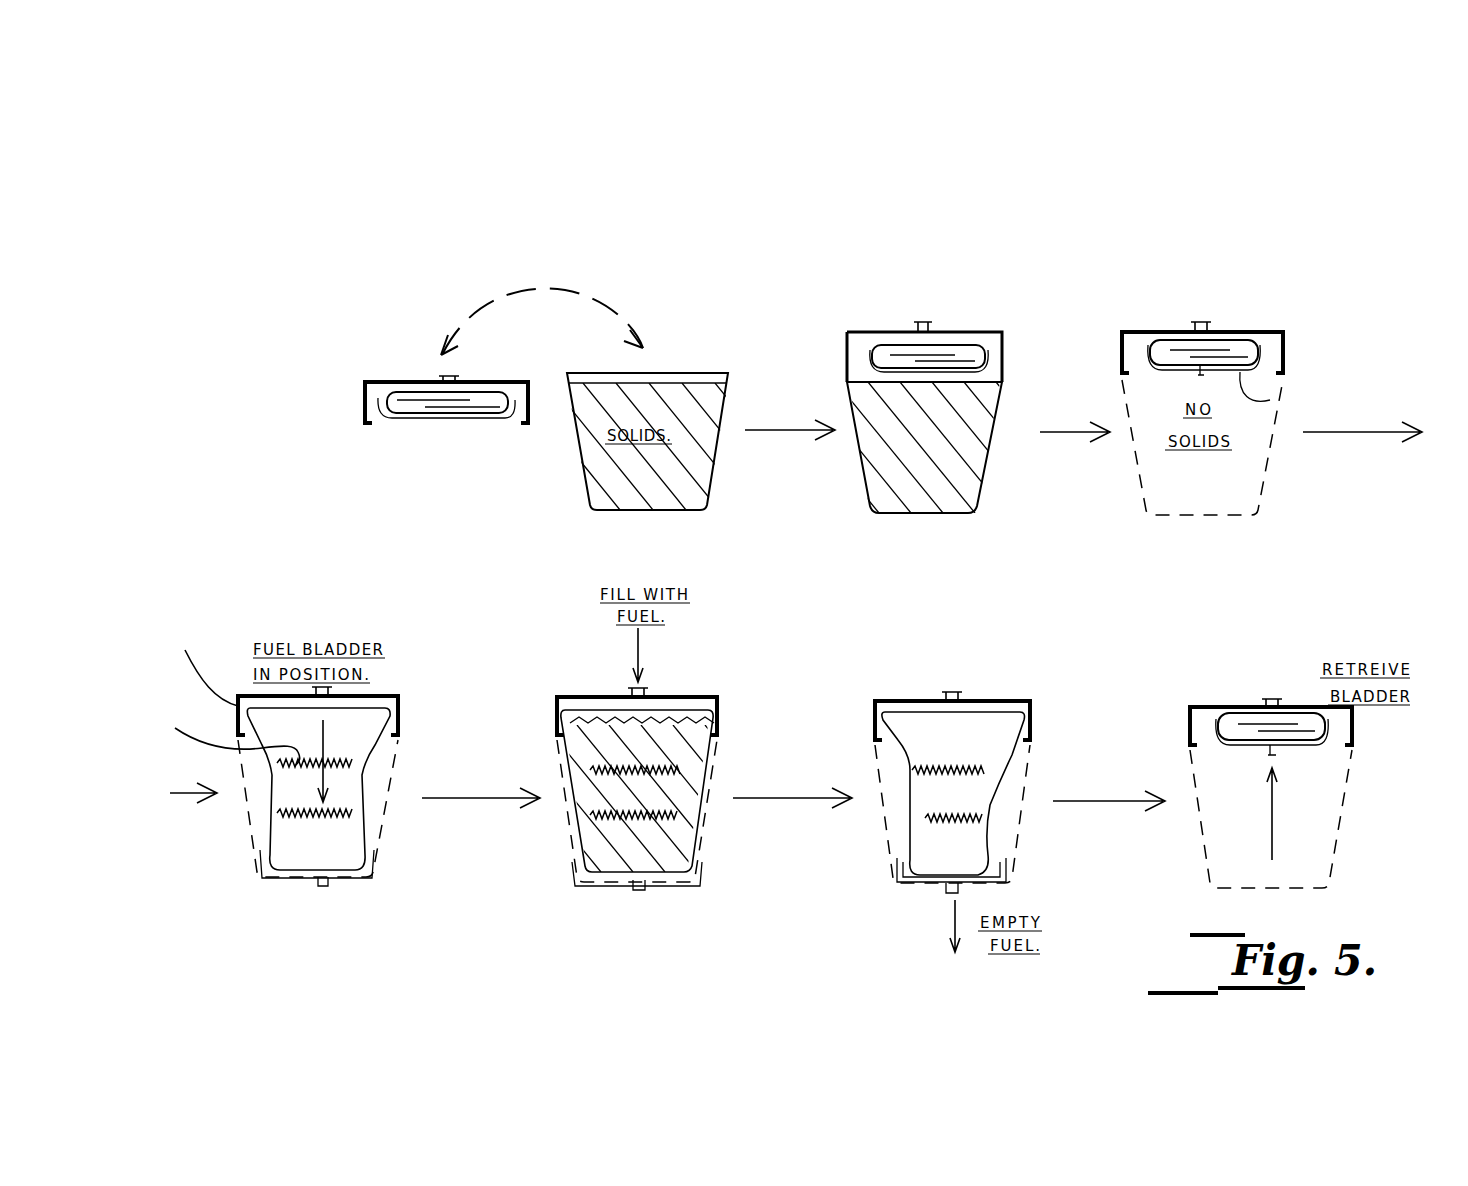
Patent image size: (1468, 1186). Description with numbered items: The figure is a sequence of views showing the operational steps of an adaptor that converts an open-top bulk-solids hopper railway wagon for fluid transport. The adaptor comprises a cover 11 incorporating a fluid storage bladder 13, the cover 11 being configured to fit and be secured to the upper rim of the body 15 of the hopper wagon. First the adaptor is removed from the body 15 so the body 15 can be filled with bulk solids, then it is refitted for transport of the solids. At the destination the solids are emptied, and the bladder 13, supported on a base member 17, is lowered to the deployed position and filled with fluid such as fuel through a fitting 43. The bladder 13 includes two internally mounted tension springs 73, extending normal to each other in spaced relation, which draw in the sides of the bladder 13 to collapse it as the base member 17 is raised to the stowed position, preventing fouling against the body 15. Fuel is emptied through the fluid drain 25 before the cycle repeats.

The cover 11 is at (343, 383).
The fluid storage bladder 13 is at (415, 398).
The body of the hopper wagon 15 is at (583, 468).
The base member 17 is at (1240, 375).
The fluid drain 25 is at (1200, 372).
The fill nozzle 43 is at (925, 323).
The tension springs 73 is at (330, 816).